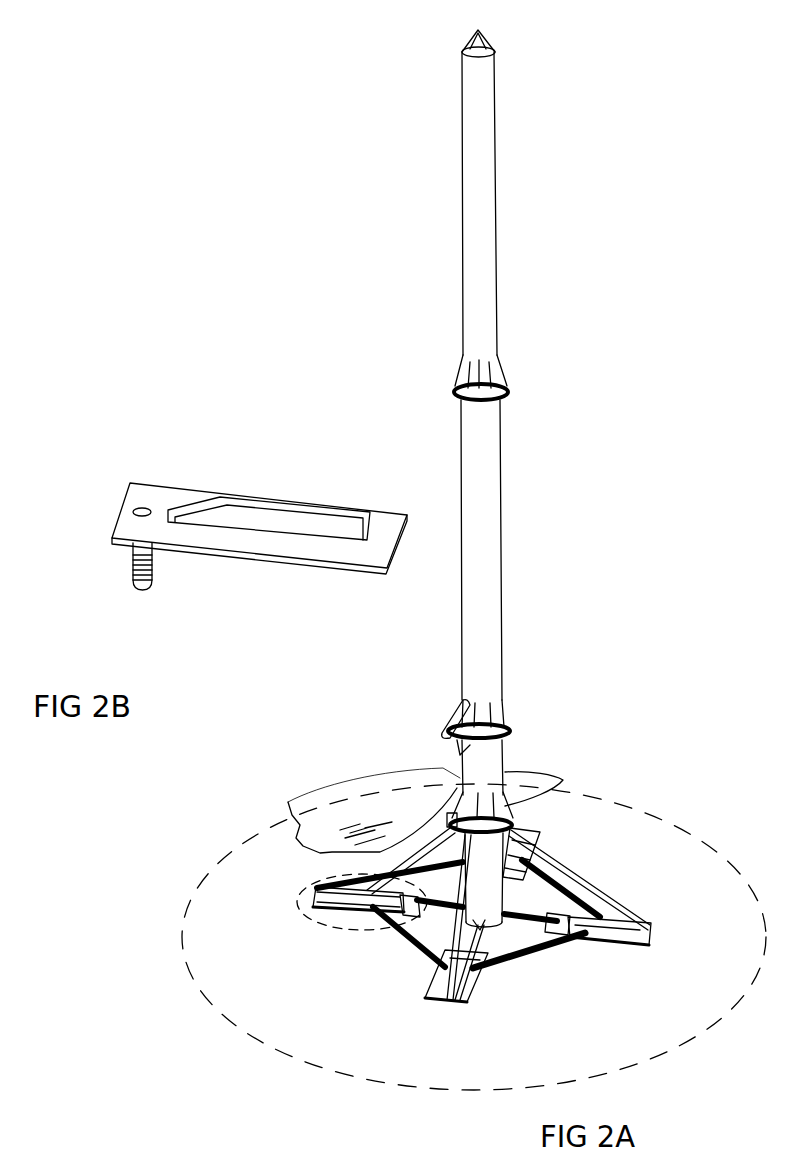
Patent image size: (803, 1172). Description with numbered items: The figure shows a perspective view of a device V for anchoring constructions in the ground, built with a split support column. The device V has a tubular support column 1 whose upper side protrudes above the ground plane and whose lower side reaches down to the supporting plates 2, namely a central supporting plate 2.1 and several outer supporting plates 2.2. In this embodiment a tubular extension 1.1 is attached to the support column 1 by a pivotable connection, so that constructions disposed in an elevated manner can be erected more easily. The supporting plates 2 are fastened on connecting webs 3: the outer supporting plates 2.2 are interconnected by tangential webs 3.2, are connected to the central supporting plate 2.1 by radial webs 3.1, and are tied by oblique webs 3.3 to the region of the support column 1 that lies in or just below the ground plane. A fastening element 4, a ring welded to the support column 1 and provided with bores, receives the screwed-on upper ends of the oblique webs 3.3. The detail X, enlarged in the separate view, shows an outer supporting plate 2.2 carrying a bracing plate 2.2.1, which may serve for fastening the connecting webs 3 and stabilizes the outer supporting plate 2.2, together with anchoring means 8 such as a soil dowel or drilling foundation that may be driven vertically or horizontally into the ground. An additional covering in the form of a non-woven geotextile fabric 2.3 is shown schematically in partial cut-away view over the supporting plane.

In FIG. 2A, the device for anchoring constructions in the ground V is at (485, 478).
In FIG. 2A, the tubular support column 1 is at (482, 478).
In FIG. 2A, the tubular extension 1.1 is at (472, 617).
In FIG. 2A, the supporting plates 2 is at (488, 905).
In FIG. 2A, the central supporting plate 2.1 is at (492, 928).
In FIG. 2A, the outer supporting plates 2.2 is at (545, 833).
In FIG. 2B, the outer supporting plates 2.2 is at (259, 537).
In FIG. 2A, the bracing plate 2.2.1 is at (322, 886).
In FIG. 2B, the bracing plate 2.2.1 is at (331, 503).
In FIG. 2A, the non-woven geotextile fabric 2.3 is at (362, 792).
In FIG. 2A, the connecting webs 3 is at (492, 931).
In FIG. 2A, the radial webs 3.1 is at (537, 930).
In FIG. 2A, the tangential webs 3.2 is at (407, 947).
In FIG. 2A, the oblique webs 3.3 is at (565, 870).
In FIG. 2A, the fastening element 4 is at (515, 811).
In FIG. 2B, the anchoring means 8 is at (144, 592).
In FIG. 2A, the detail X is at (330, 878).